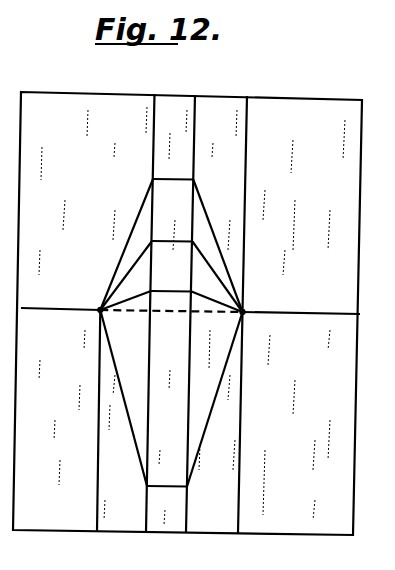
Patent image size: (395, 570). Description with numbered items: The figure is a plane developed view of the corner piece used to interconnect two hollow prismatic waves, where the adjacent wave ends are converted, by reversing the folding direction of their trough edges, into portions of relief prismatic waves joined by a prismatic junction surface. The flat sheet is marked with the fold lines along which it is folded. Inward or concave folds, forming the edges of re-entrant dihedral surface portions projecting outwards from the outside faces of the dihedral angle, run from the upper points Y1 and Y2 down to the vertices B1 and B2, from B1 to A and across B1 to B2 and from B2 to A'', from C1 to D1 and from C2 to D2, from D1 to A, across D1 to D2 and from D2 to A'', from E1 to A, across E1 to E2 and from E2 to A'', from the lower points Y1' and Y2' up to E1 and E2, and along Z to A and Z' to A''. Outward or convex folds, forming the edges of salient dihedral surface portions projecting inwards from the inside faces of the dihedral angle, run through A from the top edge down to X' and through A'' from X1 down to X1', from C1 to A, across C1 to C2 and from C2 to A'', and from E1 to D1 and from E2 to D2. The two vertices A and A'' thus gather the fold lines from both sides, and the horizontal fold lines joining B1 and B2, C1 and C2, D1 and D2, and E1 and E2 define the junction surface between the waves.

The fold line end point Y1 is at (152, 187).
The fold line end point Y2 is at (199, 188).
The fold line end point X1 is at (250, 188).
The fold line end point X' is at (93, 438).
The fold line end point Y1' is at (154, 440).
The fold line end point Y2' is at (194, 440).
The fold line end point X1' is at (245, 441).
The fold line end point Z is at (60, 299).
The fold line end point Z' is at (302, 298).
The fold vertex A is at (161, 300).
The fold vertex A'' is at (257, 299).
The fold vertex B1 is at (146, 236).
The fold vertex B2 is at (217, 237).
The fold vertex C1 is at (152, 241).
The fold vertex C2 is at (192, 242).
The fold vertex D1 is at (145, 289).
The fold vertex D2 is at (217, 290).
The fold vertex E1 is at (143, 405).
The fold vertex E2 is at (215, 406).